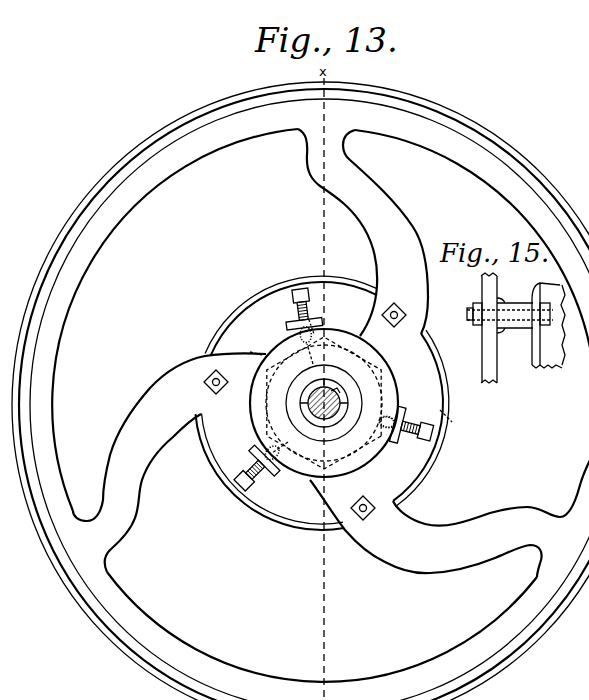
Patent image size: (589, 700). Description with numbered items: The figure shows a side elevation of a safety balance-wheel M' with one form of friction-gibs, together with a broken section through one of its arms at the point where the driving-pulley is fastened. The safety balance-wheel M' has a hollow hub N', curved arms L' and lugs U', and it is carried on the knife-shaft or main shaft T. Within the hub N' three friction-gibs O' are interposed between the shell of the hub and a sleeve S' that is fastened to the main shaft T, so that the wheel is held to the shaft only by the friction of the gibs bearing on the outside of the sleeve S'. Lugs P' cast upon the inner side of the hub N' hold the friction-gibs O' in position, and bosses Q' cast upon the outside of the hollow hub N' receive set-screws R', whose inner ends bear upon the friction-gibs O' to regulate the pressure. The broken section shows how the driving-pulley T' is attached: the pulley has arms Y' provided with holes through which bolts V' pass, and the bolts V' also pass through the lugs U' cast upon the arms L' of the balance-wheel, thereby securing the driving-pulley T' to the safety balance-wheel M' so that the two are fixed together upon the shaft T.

In FIG. 13, the arms L' is at (331, 353).
In FIG. 15, the arms L' is at (476, 328).
In FIG. 13, the safety balance-wheel M' is at (300, 391).
In FIG. 13, the hollow hub N' is at (311, 403).
In FIG. 13, the friction-gibs O' is at (343, 410).
In FIG. 13, the lugs P' is at (322, 403).
In FIG. 13, the bosses Q' is at (339, 401).
In FIG. 13, the set-screws R' is at (332, 392).
In FIG. 13, the sleeve S' is at (388, 449).
In FIG. 13, the main shaft T is at (216, 329).
In FIG. 13, the driving-pulley T' is at (465, 422).
In FIG. 15, the driving-pulley T' is at (548, 337).
In FIG. 15, the lugs U' is at (515, 331).
In FIG. 13, the bolts V' is at (295, 413).
In FIG. 15, the bolts V' is at (510, 305).
In FIG. 15, the arms Y' is at (535, 347).